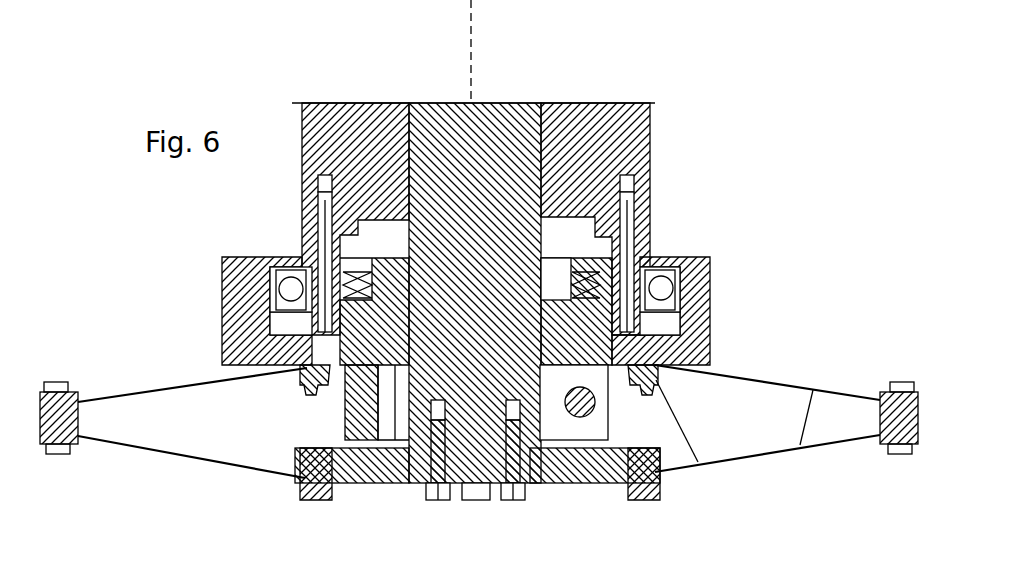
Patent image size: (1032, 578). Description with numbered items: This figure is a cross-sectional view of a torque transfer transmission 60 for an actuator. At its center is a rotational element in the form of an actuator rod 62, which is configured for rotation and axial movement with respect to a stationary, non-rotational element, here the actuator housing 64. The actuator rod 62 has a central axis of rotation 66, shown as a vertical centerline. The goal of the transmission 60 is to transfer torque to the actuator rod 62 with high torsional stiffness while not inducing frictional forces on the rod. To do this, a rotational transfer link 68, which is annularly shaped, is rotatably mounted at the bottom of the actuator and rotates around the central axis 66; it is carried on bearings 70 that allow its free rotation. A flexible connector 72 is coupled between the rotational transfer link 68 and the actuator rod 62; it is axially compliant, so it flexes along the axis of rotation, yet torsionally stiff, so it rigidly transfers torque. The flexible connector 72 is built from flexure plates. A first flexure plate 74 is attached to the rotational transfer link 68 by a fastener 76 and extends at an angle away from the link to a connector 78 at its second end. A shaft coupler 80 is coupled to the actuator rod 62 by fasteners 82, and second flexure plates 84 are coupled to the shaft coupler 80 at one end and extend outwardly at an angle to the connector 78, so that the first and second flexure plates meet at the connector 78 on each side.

The torque transfer transmission 60 is at (212, 547).
The actuator rod 62 is at (482, 130).
The actuator housing 64 is at (306, 108).
The central axis of rotation 66 is at (471, 41).
The rotational transfer link 68 is at (232, 293).
The bearings 70 is at (289, 281).
The flexible connector 72 is at (110, 460).
The first flexure plate 74 is at (170, 388).
The fastener 76 is at (305, 393).
The connector 78 is at (79, 398).
The shaft coupler 80 is at (368, 486).
The fasteners 82 is at (436, 506).
The second flexure plates 84 is at (163, 456).